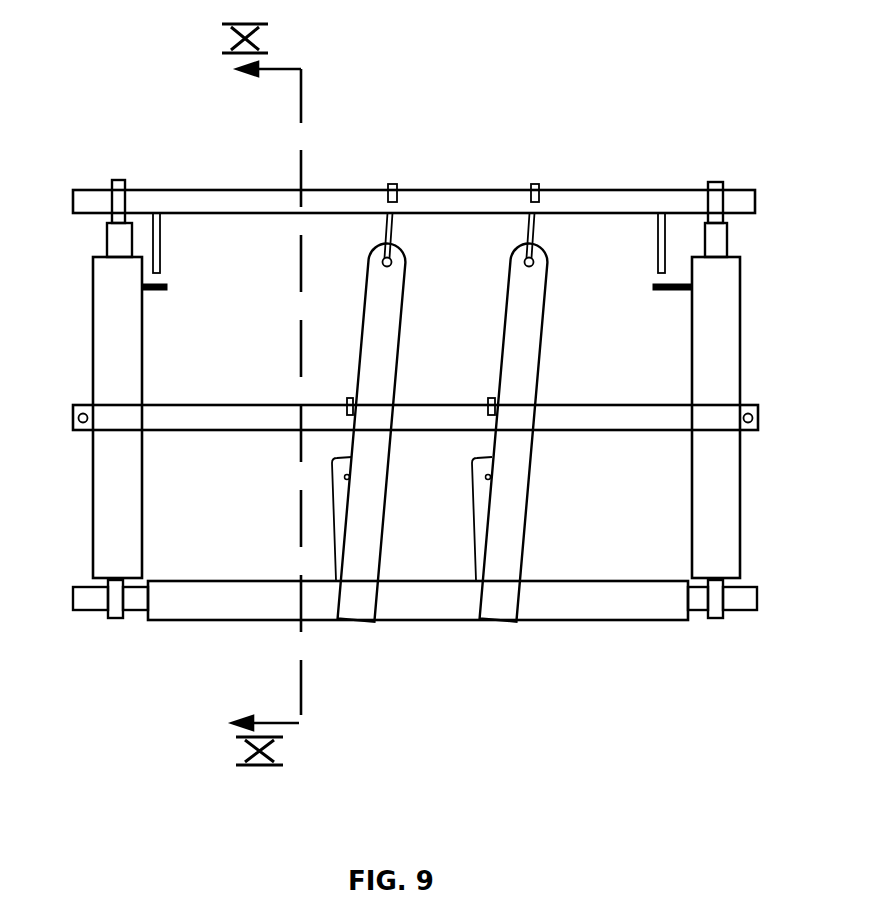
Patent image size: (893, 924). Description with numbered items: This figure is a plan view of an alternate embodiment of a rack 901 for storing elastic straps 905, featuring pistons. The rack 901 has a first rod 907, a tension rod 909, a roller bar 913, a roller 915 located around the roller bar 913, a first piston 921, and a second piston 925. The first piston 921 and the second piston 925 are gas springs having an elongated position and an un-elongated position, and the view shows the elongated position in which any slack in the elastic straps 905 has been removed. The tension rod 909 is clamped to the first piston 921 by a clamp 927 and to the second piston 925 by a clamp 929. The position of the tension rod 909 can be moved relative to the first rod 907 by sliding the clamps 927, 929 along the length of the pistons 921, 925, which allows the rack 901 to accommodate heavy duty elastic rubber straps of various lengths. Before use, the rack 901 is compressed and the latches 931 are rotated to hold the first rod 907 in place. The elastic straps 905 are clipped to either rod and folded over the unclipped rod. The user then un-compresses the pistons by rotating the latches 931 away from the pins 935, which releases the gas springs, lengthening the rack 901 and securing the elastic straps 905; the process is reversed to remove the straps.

The rack 901 is at (418, 394).
The elastic straps 905 is at (400, 338).
The first rod 907 is at (210, 190).
The tension rod 909 is at (563, 431).
The roller bar 913 is at (80, 612).
The roller 915 is at (418, 621).
The first piston 921 is at (142, 308).
The second piston 925 is at (740, 259).
The clamp 927 is at (78, 386).
The clamp 929 is at (753, 387).
The latches 931 is at (160, 235).
The pins 935 is at (167, 288).